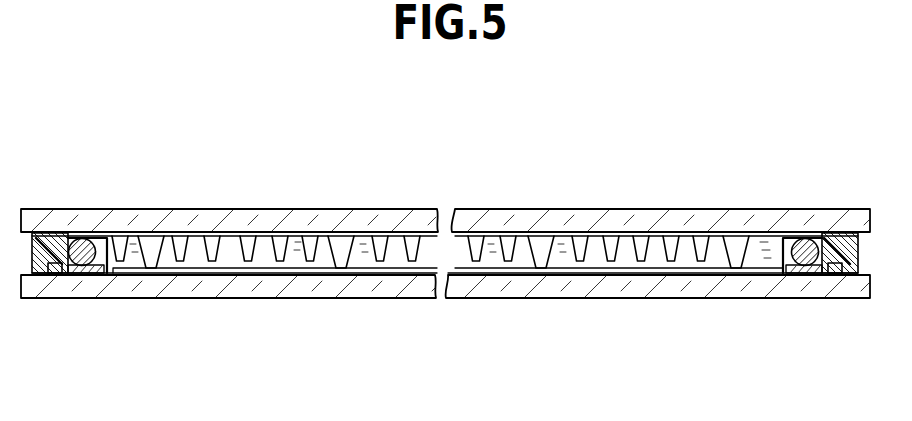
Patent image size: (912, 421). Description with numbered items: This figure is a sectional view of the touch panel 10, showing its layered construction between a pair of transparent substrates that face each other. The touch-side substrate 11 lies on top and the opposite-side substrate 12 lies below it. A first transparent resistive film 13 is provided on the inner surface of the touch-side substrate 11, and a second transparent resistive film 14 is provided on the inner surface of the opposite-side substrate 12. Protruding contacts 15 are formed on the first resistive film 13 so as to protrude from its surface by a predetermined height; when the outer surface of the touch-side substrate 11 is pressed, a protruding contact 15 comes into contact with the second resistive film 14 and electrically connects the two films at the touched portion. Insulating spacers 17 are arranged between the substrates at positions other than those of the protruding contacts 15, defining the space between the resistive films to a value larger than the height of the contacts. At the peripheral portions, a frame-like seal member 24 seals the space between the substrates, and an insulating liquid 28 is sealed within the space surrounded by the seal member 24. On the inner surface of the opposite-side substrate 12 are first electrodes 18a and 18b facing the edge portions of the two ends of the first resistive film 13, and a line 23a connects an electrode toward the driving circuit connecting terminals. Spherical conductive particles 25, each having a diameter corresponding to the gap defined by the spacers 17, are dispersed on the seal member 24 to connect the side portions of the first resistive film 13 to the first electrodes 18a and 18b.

The touch panel 10 is at (841, 202).
The touch-side transparent substrate 11 is at (215, 219).
The opposite-side transparent substrate 12 is at (200, 287).
The first transparent resistive film 13 is at (598, 234).
The second transparent resistive film 14 is at (588, 271).
The protruding contact 15 is at (700, 263).
The insulating spacer 17 is at (737, 250).
The first electrode 18a is at (85, 273).
The first electrode 18b is at (798, 273).
The line 23a is at (836, 271).
The frame-like seal member 24 is at (848, 275).
The spherical conductive particle 25 is at (806, 240).
The insulating liquid 28 is at (492, 247).